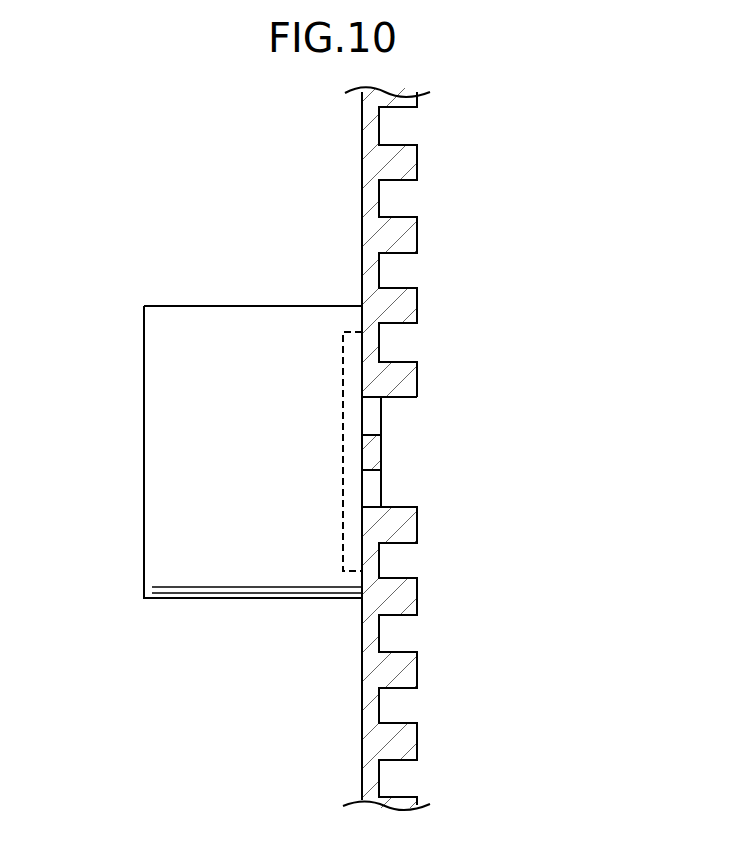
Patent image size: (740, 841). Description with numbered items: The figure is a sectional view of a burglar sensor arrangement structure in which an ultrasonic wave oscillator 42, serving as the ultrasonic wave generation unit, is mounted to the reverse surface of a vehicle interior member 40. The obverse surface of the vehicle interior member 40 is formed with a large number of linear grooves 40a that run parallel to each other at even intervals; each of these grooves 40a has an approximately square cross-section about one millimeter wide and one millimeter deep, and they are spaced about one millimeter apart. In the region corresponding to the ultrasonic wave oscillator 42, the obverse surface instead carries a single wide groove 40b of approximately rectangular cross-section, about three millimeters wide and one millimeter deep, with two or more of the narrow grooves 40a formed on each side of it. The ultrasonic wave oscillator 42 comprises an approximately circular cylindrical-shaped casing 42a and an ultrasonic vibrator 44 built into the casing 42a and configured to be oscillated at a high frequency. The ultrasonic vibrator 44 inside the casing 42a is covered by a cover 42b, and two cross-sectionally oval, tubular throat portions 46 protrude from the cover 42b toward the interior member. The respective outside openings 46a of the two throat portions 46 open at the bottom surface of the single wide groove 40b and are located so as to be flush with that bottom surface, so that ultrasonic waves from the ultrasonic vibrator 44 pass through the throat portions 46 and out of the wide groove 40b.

The vehicle interior member 40 is at (419, 163).
The grooves 40a is at (410, 326).
The groove 40b is at (413, 400).
The ultrasonic wave oscillator 42 is at (185, 306).
The casing 42a is at (157, 438).
The cover 42b is at (363, 521).
The ultrasonic vibrator 44 is at (343, 453).
The throat portions 46 is at (372, 420).
The outside openings 46a is at (381, 410).